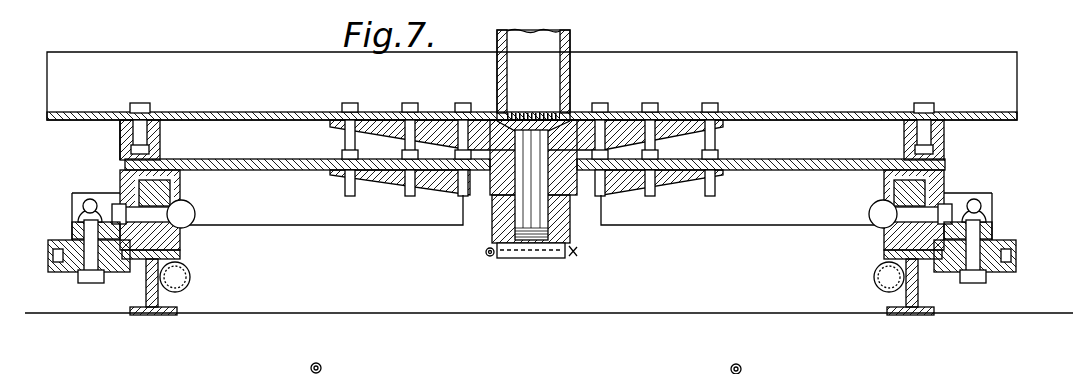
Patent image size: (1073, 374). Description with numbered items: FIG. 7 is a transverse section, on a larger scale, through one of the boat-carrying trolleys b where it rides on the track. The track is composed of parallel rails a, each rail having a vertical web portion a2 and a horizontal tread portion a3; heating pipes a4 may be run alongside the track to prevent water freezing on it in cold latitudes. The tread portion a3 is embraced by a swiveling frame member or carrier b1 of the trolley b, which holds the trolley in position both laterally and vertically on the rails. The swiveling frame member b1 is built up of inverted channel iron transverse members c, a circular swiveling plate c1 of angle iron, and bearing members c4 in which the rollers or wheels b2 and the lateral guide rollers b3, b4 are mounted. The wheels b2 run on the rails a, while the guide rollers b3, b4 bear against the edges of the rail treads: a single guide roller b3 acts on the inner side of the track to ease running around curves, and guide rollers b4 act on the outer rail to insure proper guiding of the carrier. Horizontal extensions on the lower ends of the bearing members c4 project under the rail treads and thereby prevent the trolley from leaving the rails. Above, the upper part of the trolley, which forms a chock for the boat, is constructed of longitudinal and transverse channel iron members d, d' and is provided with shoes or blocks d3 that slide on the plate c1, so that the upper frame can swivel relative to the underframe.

The rail a is at (911, 314).
The vertical web portion a2 is at (950, 325).
The horizontal tread portion a3 is at (181, 254).
The heating pipe a4 is at (871, 276).
The trolley b is at (546, 157).
The swiveling frame member b1 is at (535, 201).
The roller b2 is at (983, 161).
The lateral guide roller b3 is at (72, 265).
The lateral guide roller b4 is at (1000, 272).
The transverse member c is at (356, 222).
The circular swiveling plate c1 is at (120, 158).
The bearing member c4 is at (1013, 229).
The longitudinal channel iron member d is at (550, 75).
The transverse channel iron member d' is at (532, 66).
The shoe d3 is at (160, 117).